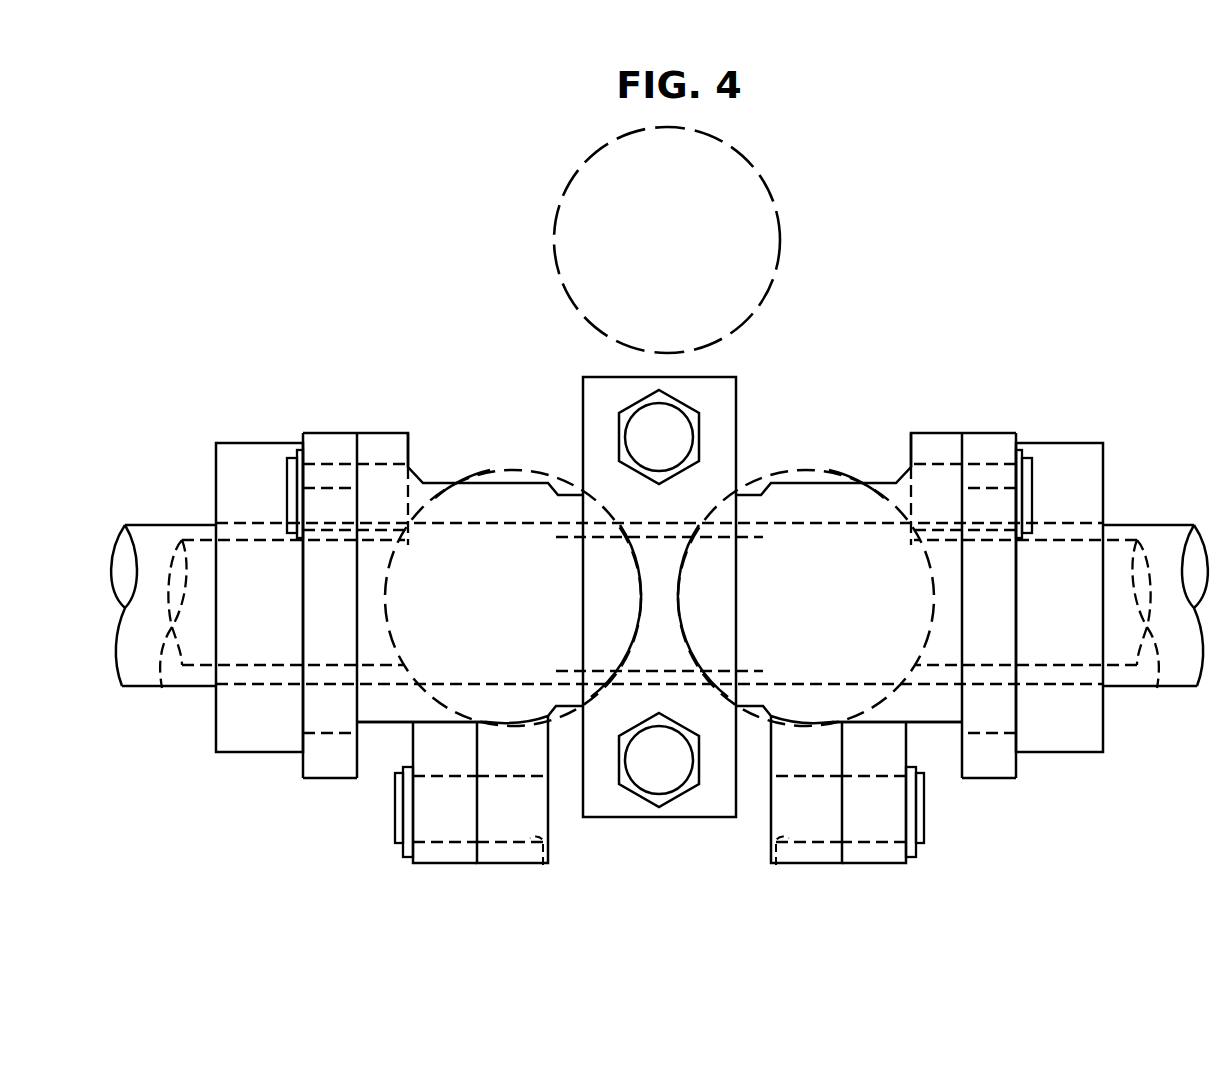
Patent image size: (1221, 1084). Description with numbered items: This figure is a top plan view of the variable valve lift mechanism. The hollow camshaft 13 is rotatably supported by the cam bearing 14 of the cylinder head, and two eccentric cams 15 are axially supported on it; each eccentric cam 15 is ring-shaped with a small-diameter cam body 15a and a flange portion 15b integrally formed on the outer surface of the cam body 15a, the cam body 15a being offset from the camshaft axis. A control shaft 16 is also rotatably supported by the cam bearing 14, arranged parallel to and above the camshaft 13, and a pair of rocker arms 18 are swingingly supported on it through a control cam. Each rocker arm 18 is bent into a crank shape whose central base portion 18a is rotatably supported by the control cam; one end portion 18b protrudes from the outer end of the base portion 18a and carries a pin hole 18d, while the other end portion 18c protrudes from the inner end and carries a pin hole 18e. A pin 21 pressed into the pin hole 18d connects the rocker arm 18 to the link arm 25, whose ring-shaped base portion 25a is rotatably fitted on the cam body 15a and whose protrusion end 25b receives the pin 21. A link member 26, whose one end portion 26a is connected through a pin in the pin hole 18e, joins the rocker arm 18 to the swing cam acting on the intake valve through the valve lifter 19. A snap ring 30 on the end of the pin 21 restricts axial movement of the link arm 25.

The camshaft 13 is at (147, 531).
The cam bearing 14 is at (745, 408).
The eccentric cam 15 is at (235, 754).
The cam body 15a is at (328, 710).
The flange portion 15b is at (229, 712).
The control shaft 16 is at (162, 689).
The rocker arm 18 is at (427, 481).
The base portion 18a is at (380, 714).
The one end portion 18b is at (388, 432).
The other end portion 18c is at (513, 866).
The pin hole 18d is at (409, 466).
The pin hole 18e is at (543, 866).
The valve lifter 19 is at (507, 467).
The pin 21 is at (284, 472).
The link arm 25 is at (338, 781).
The base portion 25a is at (348, 748).
The protrusion end 25b is at (345, 432).
The link member 26 is at (467, 869).
The one end portion 26a is at (443, 850).
The snap ring 30 is at (293, 452).